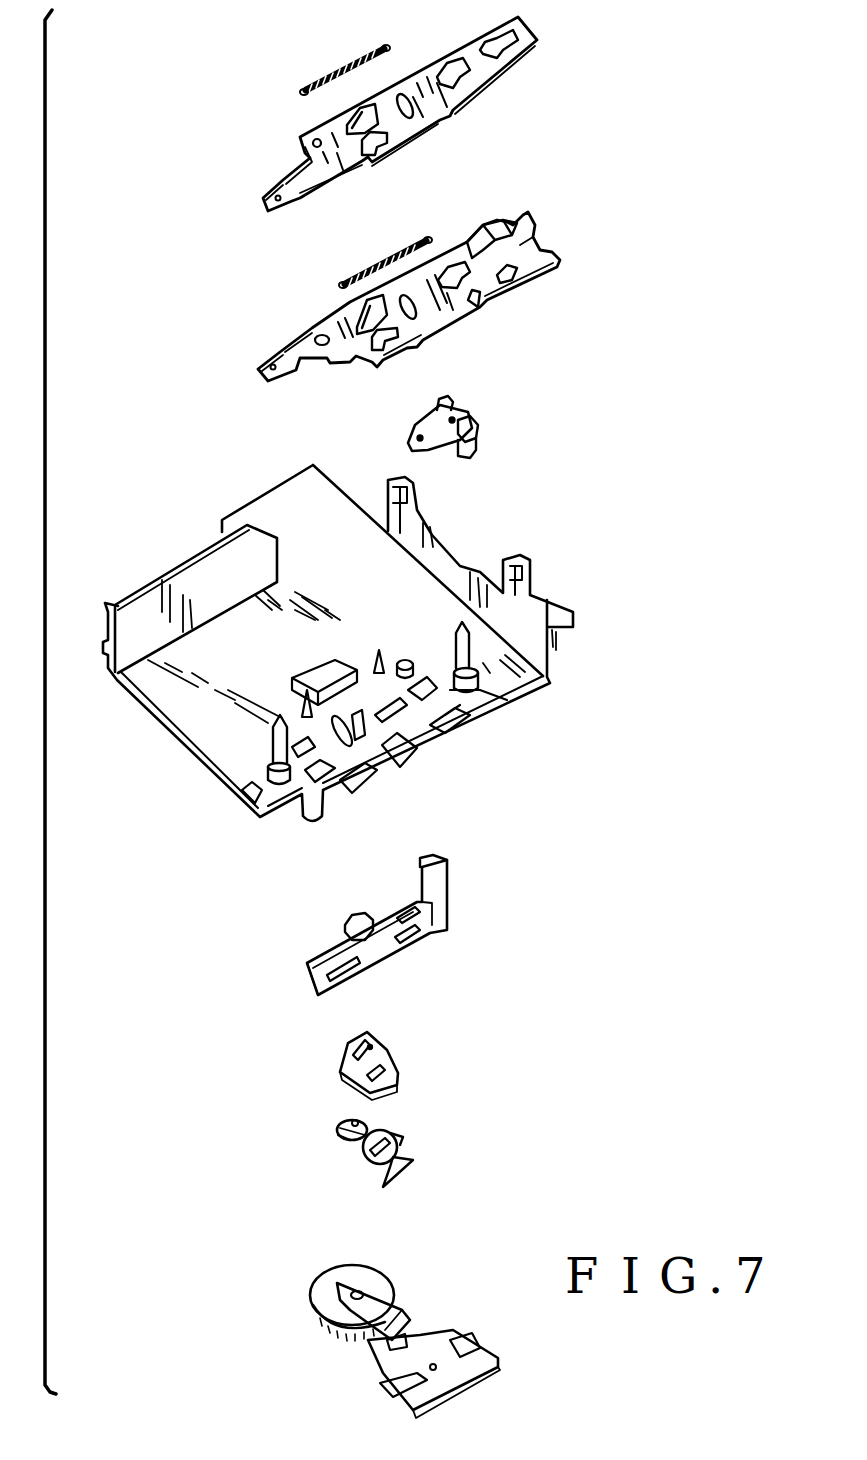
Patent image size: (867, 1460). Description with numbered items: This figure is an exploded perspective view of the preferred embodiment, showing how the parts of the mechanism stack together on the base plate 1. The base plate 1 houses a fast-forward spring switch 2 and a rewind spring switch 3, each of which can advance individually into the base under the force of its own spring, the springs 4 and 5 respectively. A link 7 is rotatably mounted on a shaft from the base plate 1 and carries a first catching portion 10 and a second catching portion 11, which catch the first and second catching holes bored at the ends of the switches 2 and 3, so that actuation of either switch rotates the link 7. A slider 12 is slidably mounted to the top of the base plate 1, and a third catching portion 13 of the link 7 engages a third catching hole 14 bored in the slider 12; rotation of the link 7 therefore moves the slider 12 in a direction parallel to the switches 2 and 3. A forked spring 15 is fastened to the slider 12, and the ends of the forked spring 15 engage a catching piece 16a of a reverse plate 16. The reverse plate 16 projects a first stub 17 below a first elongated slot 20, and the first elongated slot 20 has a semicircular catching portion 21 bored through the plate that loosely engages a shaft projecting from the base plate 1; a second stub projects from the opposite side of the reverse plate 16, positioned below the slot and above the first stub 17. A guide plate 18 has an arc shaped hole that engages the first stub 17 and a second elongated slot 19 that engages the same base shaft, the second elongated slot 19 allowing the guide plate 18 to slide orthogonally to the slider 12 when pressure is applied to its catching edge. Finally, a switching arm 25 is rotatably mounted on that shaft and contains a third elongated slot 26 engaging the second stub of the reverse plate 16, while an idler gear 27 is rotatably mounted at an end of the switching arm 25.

The base plate 1 is at (403, 580).
The fast-forward spring switch 2 is at (522, 30).
The rewind spring switch 3 is at (530, 225).
The spring 4 is at (325, 82).
The spring 5 is at (400, 258).
The link 7 is at (485, 417).
The first catching portion 10 is at (440, 404).
The second catching portion 11 is at (478, 421).
The slider 12 is at (398, 891).
The third catching portion 13 is at (433, 862).
The third catching hole 14 is at (460, 453).
The forked spring 15 is at (363, 913).
The reverse plate 16 is at (385, 1152).
The catching piece 16a is at (410, 1177).
The first stub 17 is at (355, 1115).
The guide plate 18 is at (381, 1047).
The second elongated slot 19 is at (383, 1065).
The first elongated slot 20 is at (402, 1137).
The semicircular catching portion 21 is at (350, 1140).
The switching arm 25 is at (366, 1341).
The third elongated slot 26 is at (393, 1355).
The idler gear 27 is at (323, 1302).